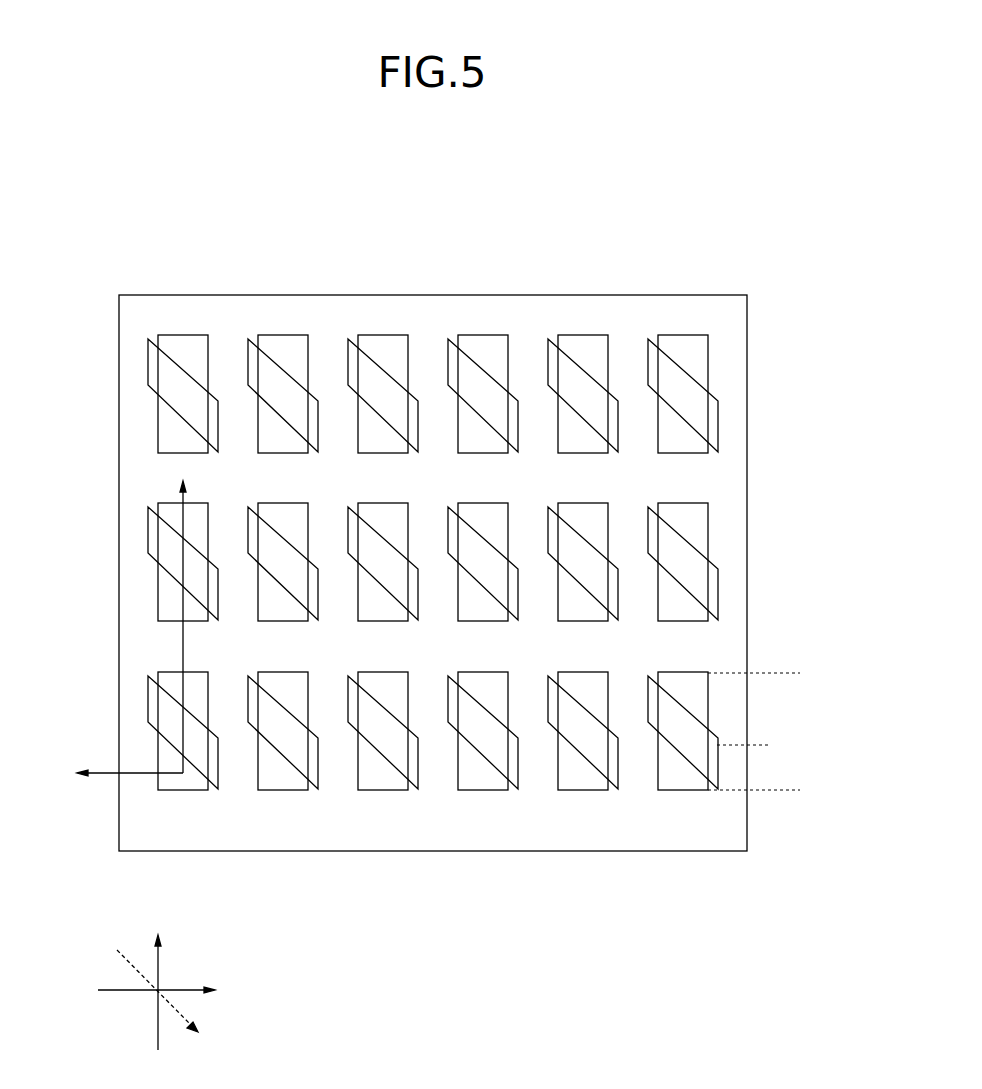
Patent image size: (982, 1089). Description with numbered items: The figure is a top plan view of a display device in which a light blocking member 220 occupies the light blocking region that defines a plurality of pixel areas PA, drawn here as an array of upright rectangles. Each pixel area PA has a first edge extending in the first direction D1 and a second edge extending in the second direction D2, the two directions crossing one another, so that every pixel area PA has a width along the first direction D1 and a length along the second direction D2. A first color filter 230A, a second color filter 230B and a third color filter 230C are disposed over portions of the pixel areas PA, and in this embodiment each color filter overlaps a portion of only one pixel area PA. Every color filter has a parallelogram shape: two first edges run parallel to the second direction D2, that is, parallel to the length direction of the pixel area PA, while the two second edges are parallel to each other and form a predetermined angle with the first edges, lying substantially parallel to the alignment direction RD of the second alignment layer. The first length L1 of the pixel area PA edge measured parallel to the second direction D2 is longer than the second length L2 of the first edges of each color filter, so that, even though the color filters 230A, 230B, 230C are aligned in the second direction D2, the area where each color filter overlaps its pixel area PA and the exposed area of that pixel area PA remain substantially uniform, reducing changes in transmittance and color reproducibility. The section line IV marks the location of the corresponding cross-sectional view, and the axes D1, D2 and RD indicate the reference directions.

The light blocking member 220 is at (723, 832).
The pixel area PA is at (709, 523).
The first color filter 230A is at (185, 368).
The second color filter 230B is at (285, 368).
The third color filter 230C is at (385, 368).
The first length L1 is at (793, 682).
The second length L2 is at (760, 754).
The section line IV is at (134, 631).
The first direction D1 is at (171, 990).
The second direction D2 is at (158, 981).
The alignment direction RD is at (171, 1003).